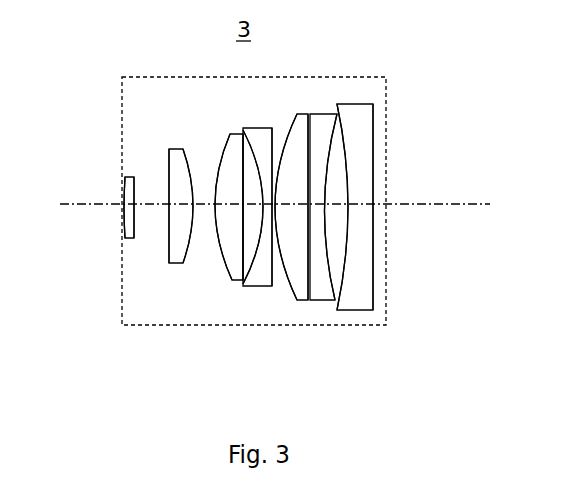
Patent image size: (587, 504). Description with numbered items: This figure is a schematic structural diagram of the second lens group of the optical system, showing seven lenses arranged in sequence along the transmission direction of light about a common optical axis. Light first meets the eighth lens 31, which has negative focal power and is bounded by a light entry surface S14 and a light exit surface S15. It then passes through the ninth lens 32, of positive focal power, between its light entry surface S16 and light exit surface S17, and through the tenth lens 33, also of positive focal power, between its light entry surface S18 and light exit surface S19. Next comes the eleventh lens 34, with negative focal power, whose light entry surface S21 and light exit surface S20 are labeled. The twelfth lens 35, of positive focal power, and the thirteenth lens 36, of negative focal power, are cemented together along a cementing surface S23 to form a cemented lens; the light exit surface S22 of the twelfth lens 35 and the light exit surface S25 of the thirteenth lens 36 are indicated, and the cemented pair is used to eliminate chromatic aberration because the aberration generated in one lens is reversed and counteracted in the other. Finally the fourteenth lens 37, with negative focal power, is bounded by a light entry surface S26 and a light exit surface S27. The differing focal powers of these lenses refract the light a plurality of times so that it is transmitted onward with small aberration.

The eighth lens 31 is at (123, 237).
The ninth lens 32 is at (176, 265).
The tenth lens 33 is at (238, 283).
The eleventh lens 34 is at (265, 289).
The twelfth lens 35 is at (307, 301).
The thirteenth lens 36 is at (325, 301).
The fourteenth lens 37 is at (368, 311).
The light entry surface of the eighth lens S14 is at (122, 194).
The light exit surface of the eighth lens S15 is at (123, 176).
The light entry surface of the ninth lens S16 is at (168, 170).
The light exit surface of the ninth lens S17 is at (191, 165).
The light entry surface of the tenth lens S18 is at (222, 165).
The light exit surface of the tenth lens S19 is at (243, 218).
The light exit surface of the eleventh lens S20 is at (249, 142).
The light entry surface of the eleventh lens S21 is at (273, 144).
The light exit surface of the twelfth lens S22 is at (287, 264).
The cementing surface of the twelfth lens and the thirteenth lens S23 is at (310, 272).
The light exit surface of the thirteenth lens S25 is at (337, 113).
The light entry surface of the fourteenth lens S26 is at (348, 216).
The light exit surface of the fourteenth lens S27 is at (373, 177).